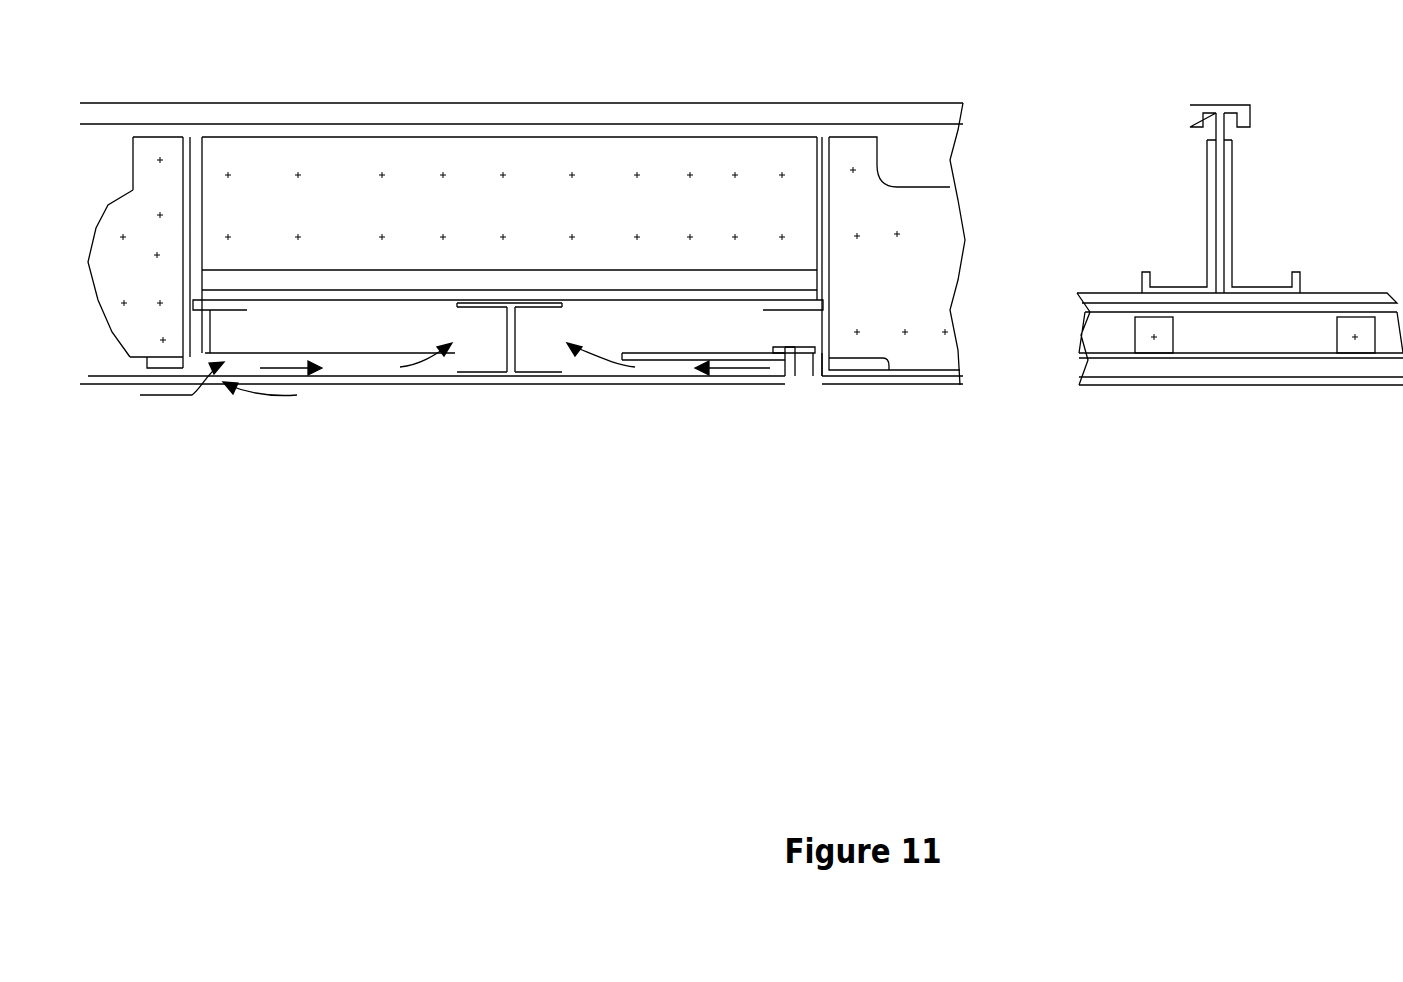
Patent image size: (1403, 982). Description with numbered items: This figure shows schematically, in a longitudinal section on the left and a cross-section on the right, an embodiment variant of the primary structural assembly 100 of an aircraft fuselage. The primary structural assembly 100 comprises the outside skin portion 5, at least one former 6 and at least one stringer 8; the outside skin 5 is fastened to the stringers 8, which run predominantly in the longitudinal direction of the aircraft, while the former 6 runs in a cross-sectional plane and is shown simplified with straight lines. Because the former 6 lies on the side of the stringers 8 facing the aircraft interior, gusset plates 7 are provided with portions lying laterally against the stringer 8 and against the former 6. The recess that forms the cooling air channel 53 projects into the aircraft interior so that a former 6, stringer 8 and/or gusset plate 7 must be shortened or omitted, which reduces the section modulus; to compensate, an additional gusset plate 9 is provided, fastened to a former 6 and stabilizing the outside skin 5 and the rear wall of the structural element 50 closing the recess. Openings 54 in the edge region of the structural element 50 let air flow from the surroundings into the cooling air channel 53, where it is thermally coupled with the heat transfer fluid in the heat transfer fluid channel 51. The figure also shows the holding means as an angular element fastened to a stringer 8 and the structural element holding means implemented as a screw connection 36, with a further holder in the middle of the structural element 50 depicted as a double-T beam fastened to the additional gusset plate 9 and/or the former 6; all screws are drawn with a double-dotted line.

The primary structural assembly 100 is at (905, 24).
The additional gusset plate 9 is at (528, 190).
The cooling air channel 53 is at (480, 315).
The screw connection 36 is at (535, 372).
The heat transfer fluid channel 51 is at (587, 375).
The outside skin portion 5 is at (100, 377).
The former 6 is at (1192, 117).
The gusset plate 7 is at (912, 232).
The stringer 8 is at (1087, 320).
The opening 54 is at (212, 378).
The structural element 50 is at (420, 450).